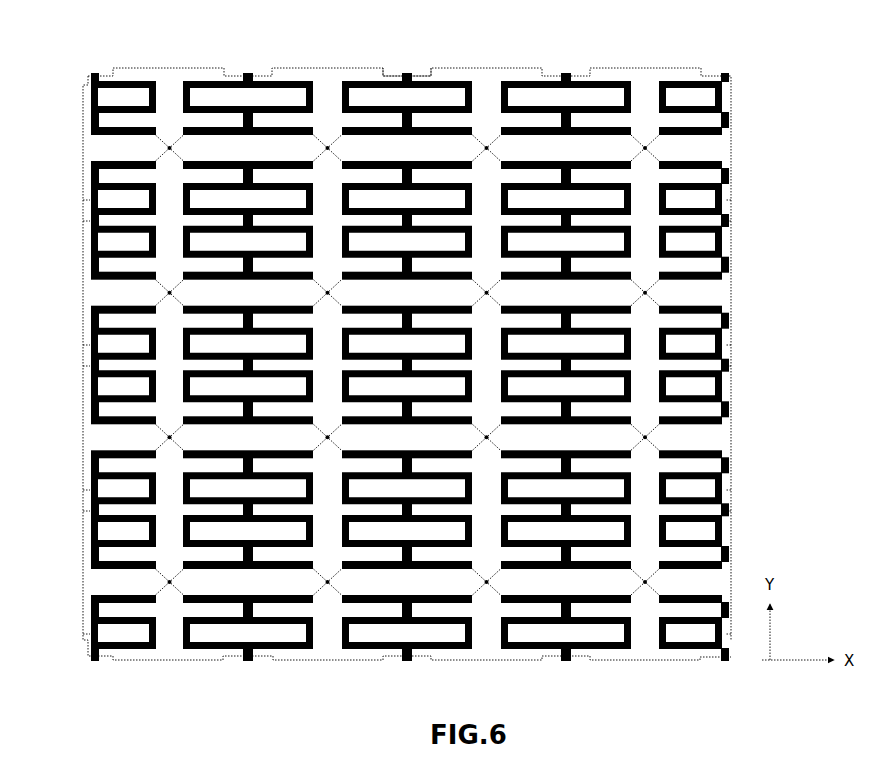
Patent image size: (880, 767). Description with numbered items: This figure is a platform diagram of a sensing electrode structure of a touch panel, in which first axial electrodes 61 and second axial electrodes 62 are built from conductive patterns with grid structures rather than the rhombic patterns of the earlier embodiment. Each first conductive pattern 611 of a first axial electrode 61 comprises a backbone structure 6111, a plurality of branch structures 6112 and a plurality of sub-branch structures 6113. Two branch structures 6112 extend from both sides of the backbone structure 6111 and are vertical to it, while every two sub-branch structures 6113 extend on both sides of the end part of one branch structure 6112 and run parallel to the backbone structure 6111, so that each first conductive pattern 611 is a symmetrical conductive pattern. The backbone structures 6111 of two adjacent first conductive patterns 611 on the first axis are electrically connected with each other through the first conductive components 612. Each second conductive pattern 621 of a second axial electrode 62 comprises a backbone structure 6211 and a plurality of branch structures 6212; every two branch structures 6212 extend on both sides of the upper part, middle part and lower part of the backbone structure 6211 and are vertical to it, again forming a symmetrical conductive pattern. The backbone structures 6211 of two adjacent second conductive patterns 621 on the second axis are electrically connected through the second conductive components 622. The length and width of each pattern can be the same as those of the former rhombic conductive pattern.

The first axial electrode 61 is at (368, 307).
The second axial electrode 62 is at (152, 68).
The first conductive pattern 611 is at (260, 91).
The first conductive component 612 is at (170, 92).
The backbone structure 6111 is at (260, 90).
The branch structure 6112 is at (266, 81).
The sub-branch structure 6113 is at (248, 79).
The second conductive pattern 621 is at (97, 194).
The backbone structure 6211 is at (82, 191).
The branch structure 6212 is at (82, 193).
The second conductive component 622 is at (372, 76).